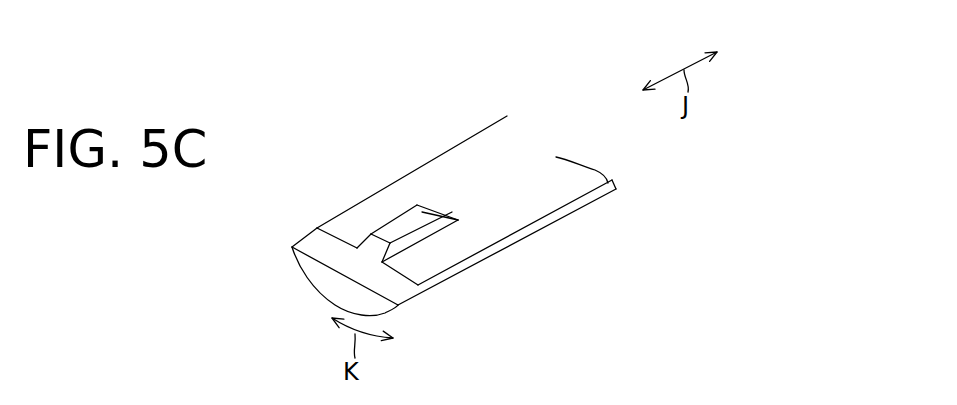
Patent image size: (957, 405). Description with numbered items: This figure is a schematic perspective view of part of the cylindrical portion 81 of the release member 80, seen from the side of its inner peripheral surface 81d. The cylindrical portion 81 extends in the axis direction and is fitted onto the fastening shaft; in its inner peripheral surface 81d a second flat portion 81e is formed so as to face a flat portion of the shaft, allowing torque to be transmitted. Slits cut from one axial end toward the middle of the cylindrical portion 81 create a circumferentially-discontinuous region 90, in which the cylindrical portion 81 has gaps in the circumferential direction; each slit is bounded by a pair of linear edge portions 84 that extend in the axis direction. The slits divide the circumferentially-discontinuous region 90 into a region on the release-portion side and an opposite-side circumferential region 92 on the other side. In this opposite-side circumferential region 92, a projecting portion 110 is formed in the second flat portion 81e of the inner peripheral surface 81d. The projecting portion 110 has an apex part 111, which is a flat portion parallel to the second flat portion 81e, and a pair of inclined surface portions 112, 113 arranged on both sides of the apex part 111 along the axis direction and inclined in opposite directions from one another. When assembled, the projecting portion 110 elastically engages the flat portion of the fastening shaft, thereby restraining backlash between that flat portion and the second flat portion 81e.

The release member 80 is at (502, 92).
The cylindrical portion 81 is at (560, 217).
The inner peripheral surface 81d is at (542, 178).
The second flat portion 81e is at (510, 162).
The linear edge portion 84 is at (480, 143).
The circumferentially-discontinuous region 90 is at (460, 293).
The opposite-side circumferential region 92 is at (417, 297).
The projecting portion 110 is at (407, 225).
The apex part 111 is at (392, 233).
The inclined surface portion 112 is at (378, 247).
The inclined surface portion 113 is at (446, 216).